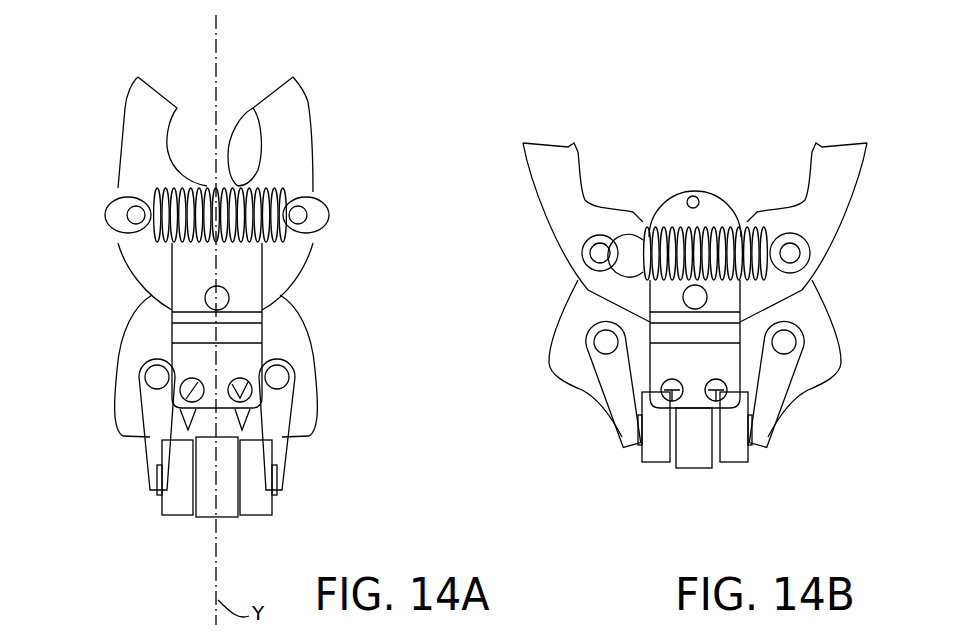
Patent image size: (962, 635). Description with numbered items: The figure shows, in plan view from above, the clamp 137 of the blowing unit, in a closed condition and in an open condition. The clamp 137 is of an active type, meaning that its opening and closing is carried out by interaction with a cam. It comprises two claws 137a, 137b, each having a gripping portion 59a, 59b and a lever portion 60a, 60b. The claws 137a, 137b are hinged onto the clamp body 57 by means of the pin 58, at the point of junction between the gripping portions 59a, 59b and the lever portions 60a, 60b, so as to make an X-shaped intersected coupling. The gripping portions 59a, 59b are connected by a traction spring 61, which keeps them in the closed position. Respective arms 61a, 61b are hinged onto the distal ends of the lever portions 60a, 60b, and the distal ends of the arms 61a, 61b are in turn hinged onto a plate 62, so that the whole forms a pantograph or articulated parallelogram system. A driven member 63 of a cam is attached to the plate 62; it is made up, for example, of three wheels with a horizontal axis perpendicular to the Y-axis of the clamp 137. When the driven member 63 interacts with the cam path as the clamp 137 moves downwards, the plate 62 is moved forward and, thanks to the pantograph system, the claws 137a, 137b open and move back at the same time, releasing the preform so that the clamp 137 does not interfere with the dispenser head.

In FIG. 14A, the clamp 137 is at (316, 72).
In FIG. 14B, the clamp 137 is at (781, 125).
In FIG. 14A, the claw 137a is at (328, 122).
In FIG. 14B, the claw 137a is at (868, 158).
In FIG. 14A, the claw 137b is at (110, 103).
In FIG. 14B, the claw 137b is at (524, 157).
In FIG. 14A, the clamp body 57 is at (262, 294).
In FIG. 14B, the clamp body 57 is at (720, 296).
In FIG. 14A, the pin 58 is at (172, 296).
In FIG. 14B, the pin 58 is at (650, 295).
In FIG. 14A, the gripping portion 59a is at (298, 166).
In FIG. 14B, the gripping portion 59a is at (830, 205).
In FIG. 14A, the gripping portion 59b is at (136, 165).
In FIG. 14B, the gripping portion 59b is at (545, 200).
In FIG. 14A, the lever portion 60a is at (125, 345).
In FIG. 14B, the lever portion 60a is at (562, 358).
In FIG. 14A, the lever portion 60b is at (314, 370).
In FIG. 14B, the lever portion 60b is at (815, 352).
In FIG. 14A, the traction spring 61 is at (252, 111).
In FIG. 14B, the traction spring 61 is at (727, 200).
In FIG. 14A, the arm 61a is at (147, 440).
In FIG. 14B, the arm 61a is at (620, 392).
In FIG. 14A, the arm 61b is at (288, 455).
In FIG. 14B, the arm 61b is at (775, 390).
In FIG. 14A, the plate 62 is at (236, 431).
In FIG. 14A, the driven member 63 is at (176, 531).
In FIG. 14B, the driven member 63 is at (657, 496).